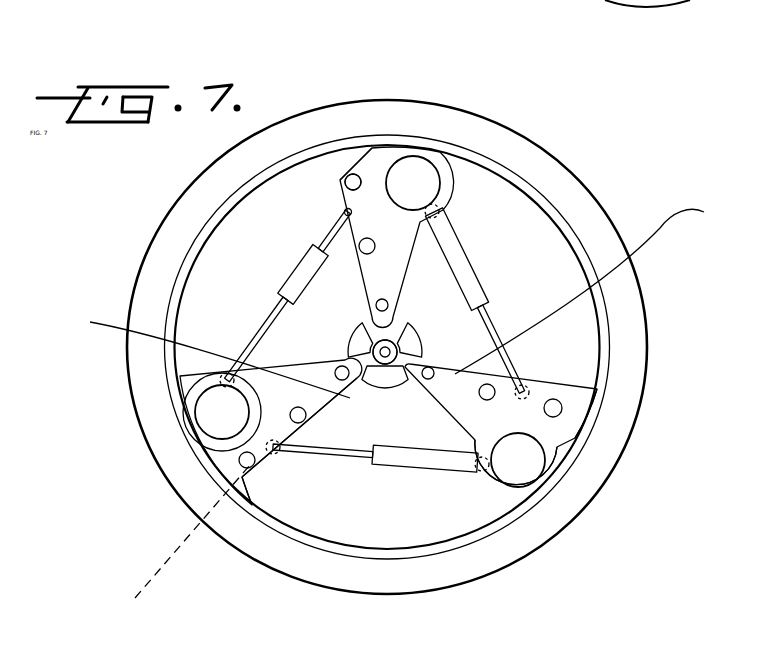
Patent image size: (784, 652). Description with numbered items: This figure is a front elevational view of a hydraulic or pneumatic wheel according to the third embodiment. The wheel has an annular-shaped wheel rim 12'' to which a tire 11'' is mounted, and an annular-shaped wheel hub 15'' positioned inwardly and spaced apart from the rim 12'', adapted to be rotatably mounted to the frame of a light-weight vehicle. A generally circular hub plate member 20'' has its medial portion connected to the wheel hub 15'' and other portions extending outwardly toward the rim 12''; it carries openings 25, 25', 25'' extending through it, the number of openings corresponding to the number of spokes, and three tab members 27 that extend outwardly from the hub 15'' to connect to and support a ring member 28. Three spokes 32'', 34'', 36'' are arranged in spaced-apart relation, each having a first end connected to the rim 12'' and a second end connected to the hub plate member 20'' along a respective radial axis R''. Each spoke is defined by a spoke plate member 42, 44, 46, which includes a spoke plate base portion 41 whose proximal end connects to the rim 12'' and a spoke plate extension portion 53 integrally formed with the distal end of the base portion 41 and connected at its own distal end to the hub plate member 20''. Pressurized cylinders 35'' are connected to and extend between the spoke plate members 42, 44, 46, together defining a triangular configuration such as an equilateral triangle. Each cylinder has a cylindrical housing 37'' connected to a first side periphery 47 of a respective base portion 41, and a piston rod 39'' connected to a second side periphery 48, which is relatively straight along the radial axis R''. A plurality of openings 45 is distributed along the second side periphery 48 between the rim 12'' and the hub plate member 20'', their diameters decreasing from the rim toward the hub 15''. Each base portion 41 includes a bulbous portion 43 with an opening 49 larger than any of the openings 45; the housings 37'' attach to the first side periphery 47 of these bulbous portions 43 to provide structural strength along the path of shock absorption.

The tire 11'' is at (388, 347).
The wheel rim 12'' is at (387, 328).
The wheel hub 15'' is at (471, 210).
The hub plate member 20'' is at (367, 392).
The hub opening 25 is at (342, 331).
The openings 25' is at (429, 325).
The hub opening 25'' is at (405, 405).
The tab members 27 is at (426, 346).
The ring member 28 is at (345, 347).
The spoke 32'' is at (377, 469).
The spoke 34'' is at (547, 364).
The pressurized cylinders 35'' is at (385, 374).
The spoke 36'' is at (320, 191).
The cylindrical housing 37'' is at (212, 356).
The piston rod 39'' is at (322, 241).
The spoke plate base portion 41 is at (232, 468).
The spoke plate member 42 is at (227, 450).
The bulbous portion 43 is at (444, 163).
The spoke plate member 44 is at (557, 447).
The openings 45 is at (346, 184).
The spoke plate member 46 is at (371, 148).
The first side periphery 47 is at (190, 374).
The second side periphery 48 is at (362, 252).
The opening 49 is at (409, 157).
The spoke plate extension portion 53 is at (395, 299).
The radial axis R'' is at (174, 542).